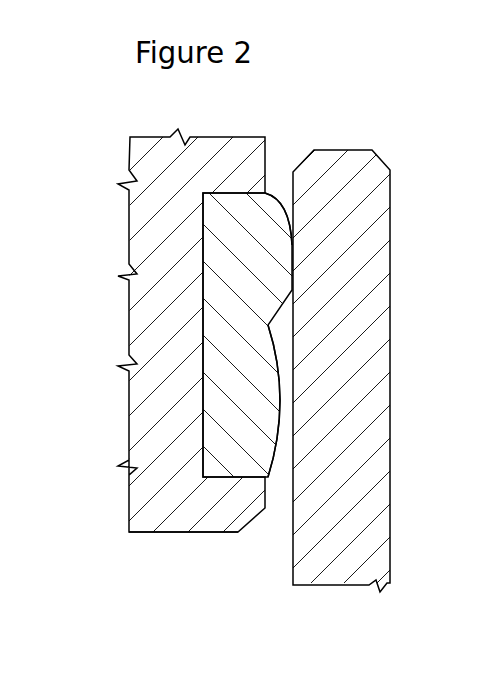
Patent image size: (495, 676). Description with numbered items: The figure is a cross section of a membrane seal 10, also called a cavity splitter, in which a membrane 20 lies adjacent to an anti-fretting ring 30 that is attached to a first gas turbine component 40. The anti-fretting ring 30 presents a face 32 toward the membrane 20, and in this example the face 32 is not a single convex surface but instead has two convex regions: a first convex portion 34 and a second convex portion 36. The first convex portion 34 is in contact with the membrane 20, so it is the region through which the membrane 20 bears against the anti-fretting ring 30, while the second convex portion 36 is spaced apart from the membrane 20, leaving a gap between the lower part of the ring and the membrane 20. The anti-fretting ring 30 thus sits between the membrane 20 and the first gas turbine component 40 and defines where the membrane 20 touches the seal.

The membrane seal 10 is at (357, 112).
The membrane 20 is at (380, 368).
The anti-fretting ring 30 is at (205, 250).
The face 32 is at (272, 195).
The first convex portion 34 is at (285, 270).
The second convex portion 36 is at (262, 402).
The first gas turbine component 40 is at (197, 532).